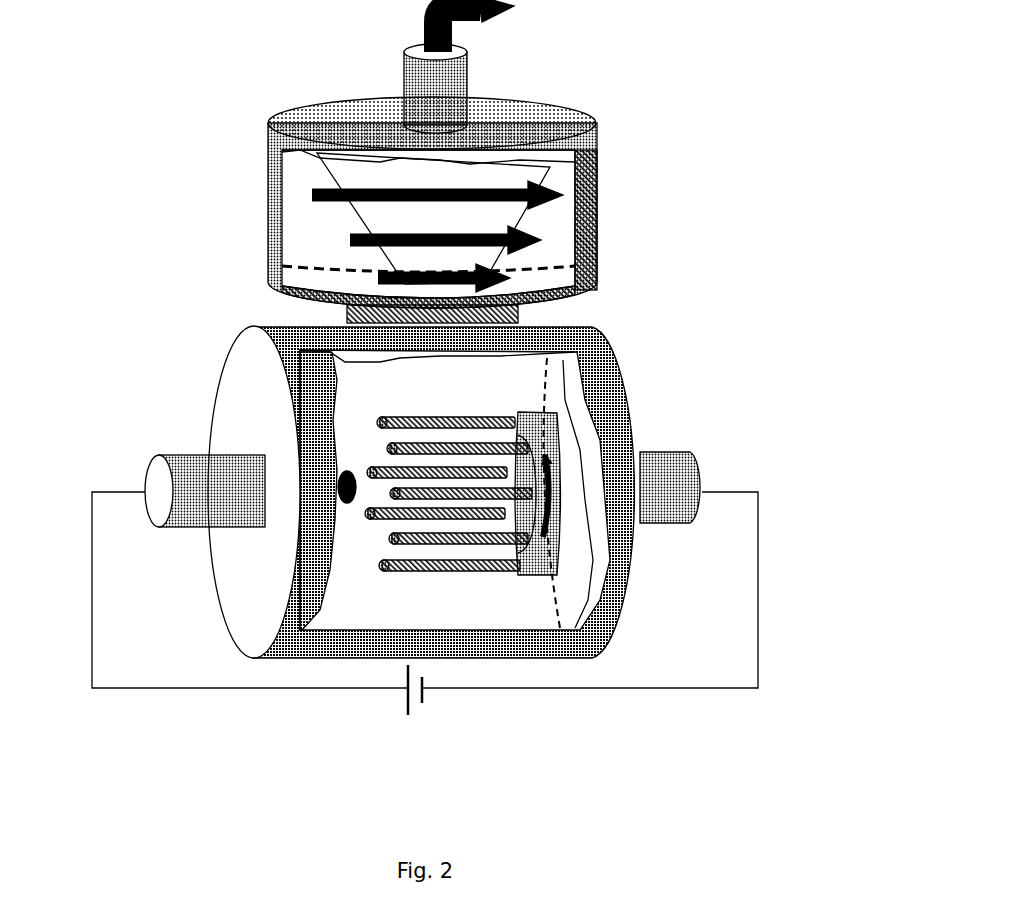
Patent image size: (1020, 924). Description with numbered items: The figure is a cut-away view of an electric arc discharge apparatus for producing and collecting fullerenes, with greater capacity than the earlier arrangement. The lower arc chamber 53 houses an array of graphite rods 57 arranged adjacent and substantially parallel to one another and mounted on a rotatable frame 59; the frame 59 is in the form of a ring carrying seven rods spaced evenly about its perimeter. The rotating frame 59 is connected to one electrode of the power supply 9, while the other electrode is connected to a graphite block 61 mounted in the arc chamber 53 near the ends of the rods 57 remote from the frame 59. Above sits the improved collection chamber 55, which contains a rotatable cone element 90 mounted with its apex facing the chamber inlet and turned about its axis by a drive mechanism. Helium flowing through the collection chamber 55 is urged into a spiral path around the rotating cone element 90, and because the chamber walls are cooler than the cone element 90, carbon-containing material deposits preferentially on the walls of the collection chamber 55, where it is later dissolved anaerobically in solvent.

The power supply 9 is at (425, 617).
The arc chamber 53 is at (240, 332).
The collection chamber 55 is at (270, 190).
The graphite rods 57 is at (477, 563).
The rotatable frame 59 is at (548, 432).
The graphite block 61 is at (345, 503).
The cone element 90 is at (512, 182).